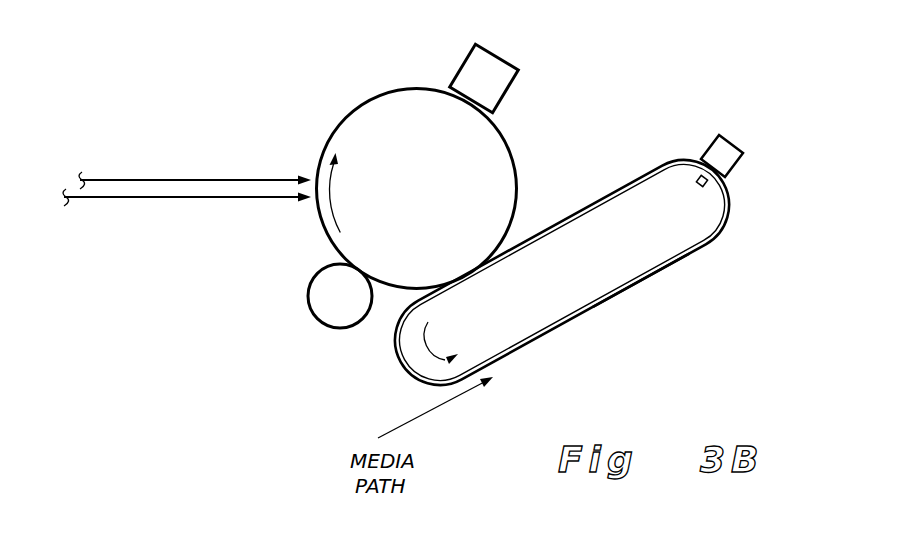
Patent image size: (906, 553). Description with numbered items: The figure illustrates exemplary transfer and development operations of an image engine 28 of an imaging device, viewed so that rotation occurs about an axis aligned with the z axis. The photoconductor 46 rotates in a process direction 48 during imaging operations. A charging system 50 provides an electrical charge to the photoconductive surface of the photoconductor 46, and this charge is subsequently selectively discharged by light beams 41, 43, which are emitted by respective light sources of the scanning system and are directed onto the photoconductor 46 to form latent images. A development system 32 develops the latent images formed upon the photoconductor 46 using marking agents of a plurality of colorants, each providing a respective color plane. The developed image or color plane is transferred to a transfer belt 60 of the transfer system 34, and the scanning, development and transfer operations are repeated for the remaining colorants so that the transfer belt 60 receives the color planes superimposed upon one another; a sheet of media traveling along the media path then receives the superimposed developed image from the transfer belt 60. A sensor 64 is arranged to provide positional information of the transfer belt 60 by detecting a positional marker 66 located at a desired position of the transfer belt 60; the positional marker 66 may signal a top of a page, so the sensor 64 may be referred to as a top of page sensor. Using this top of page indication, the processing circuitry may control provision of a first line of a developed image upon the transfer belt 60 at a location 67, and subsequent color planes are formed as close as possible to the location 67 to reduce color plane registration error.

The image engine 28 is at (597, 78).
The development system 32 is at (500, 52).
The transfer system 34 is at (754, 190).
The light beam 41 is at (188, 178).
The light beam 43 is at (160, 198).
The photoconductor 46 is at (348, 108).
The process direction 48 is at (330, 203).
The charging system 50 is at (318, 318).
The transfer belt 60 is at (683, 163).
The sensor 64 is at (729, 140).
The positional marker 66 is at (699, 185).
The location 67 is at (657, 277).